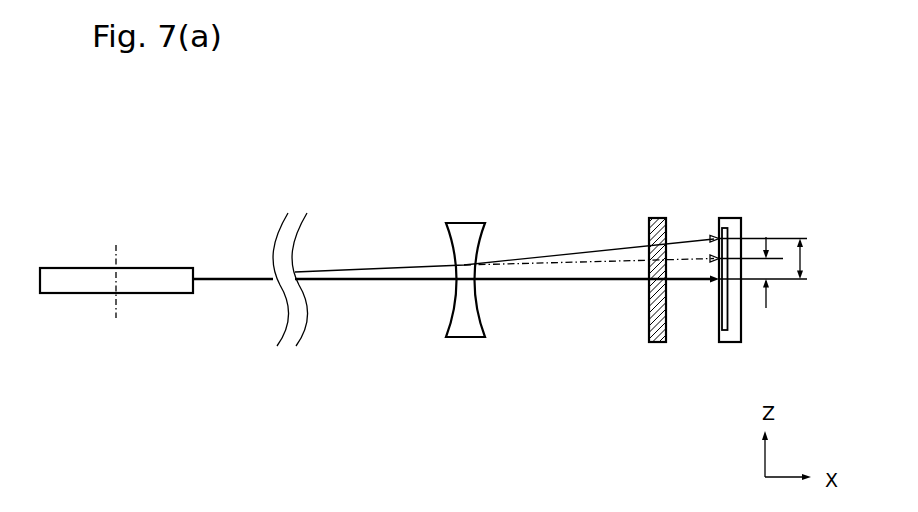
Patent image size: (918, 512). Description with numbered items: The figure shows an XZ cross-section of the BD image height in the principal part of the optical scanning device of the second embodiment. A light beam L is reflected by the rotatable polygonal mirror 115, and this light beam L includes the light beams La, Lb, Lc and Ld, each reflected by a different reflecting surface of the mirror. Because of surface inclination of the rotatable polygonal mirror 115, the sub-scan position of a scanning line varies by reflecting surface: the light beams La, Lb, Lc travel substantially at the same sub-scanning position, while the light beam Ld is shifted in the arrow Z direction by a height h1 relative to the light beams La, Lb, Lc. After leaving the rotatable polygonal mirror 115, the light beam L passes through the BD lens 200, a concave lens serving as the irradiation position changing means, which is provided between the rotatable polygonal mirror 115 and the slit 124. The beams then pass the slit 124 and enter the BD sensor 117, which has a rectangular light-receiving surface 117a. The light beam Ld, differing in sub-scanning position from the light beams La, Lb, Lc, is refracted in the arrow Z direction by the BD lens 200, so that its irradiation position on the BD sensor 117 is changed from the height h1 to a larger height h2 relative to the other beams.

The rotatable polygonal mirror 115 is at (77, 268).
The light beam L is at (500, 290).
The light beam La is at (500, 312).
The light beam Lb is at (500, 312).
The light beam Lc is at (545, 281).
The BD lens 200 is at (460, 223).
The light beam Ld is at (577, 255).
The slit 124 is at (657, 218).
The BD sensor 117 is at (690, 273).
The light-receiving surface 117a is at (716, 308).
The height h1 is at (770, 266).
The height h2 is at (803, 263).